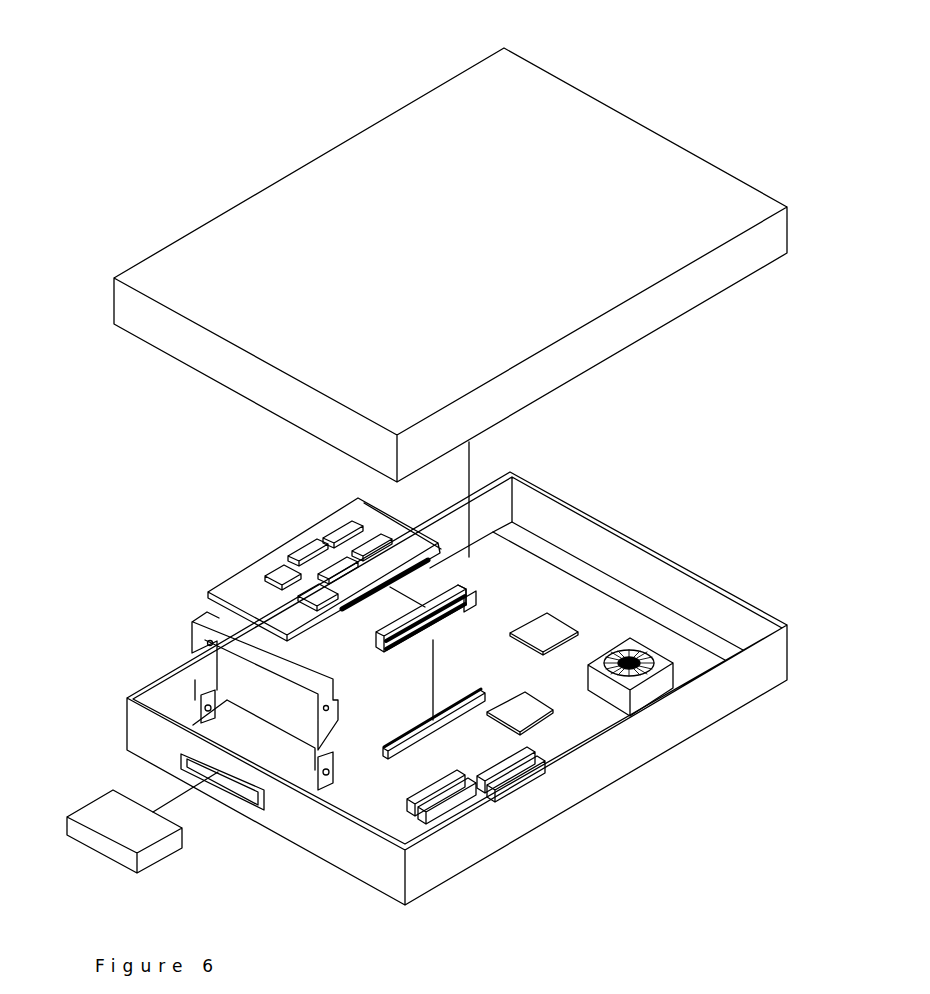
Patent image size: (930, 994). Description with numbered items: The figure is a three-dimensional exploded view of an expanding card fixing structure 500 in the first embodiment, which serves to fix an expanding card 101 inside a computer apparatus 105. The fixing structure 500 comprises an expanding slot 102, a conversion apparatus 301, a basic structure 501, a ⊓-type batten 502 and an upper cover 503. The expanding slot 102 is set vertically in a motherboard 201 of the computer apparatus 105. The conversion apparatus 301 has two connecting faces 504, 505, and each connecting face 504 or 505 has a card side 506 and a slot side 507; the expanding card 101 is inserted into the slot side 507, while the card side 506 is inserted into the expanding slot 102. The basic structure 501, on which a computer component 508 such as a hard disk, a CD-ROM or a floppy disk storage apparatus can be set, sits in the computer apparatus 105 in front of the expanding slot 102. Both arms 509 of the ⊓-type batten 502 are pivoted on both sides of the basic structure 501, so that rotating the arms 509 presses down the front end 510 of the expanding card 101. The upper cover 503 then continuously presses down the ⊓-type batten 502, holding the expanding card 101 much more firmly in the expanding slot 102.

The expanding card fixing structure 500 is at (735, 34).
The upper cover 503 is at (787, 228).
The computer apparatus 105 is at (653, 547).
The motherboard 201 is at (687, 653).
The conversion apparatus 301 is at (503, 573).
The expanding slot 102 is at (433, 730).
The expanding card 101 is at (278, 547).
The connecting face 504 is at (373, 637).
The slot side 507 is at (406, 647).
The connecting face 505 is at (477, 598).
The card side 506 is at (522, 598).
The front end 510 is at (466, 615).
The ⊓-type batten 502 is at (247, 642).
The arms 509 is at (192, 637).
The basic structure 501 is at (218, 735).
The computer component 508 is at (97, 810).